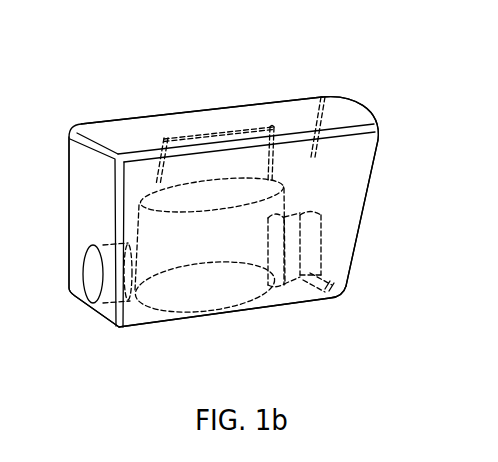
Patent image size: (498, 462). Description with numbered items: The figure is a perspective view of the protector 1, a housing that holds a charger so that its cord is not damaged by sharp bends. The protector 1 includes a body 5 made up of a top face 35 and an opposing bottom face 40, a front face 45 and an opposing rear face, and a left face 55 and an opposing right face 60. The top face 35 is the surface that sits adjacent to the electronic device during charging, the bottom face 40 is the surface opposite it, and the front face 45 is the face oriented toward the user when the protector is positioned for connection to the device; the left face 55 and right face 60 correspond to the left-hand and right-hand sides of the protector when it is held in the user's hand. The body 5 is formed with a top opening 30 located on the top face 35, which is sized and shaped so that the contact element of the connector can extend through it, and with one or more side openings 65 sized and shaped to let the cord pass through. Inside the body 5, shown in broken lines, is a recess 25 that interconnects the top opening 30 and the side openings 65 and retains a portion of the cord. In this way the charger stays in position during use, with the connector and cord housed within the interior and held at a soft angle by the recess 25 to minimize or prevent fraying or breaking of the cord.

The protector 1 is at (185, 39).
The body 5 is at (147, 183).
The recess 25 is at (205, 247).
The top opening 30 is at (207, 130).
The top face 35 is at (290, 97).
The bottom face 40 is at (308, 300).
The front face 45 is at (340, 196).
The left face 55 is at (78, 198).
The right face 60 is at (356, 149).
The side opening 65 is at (104, 303).